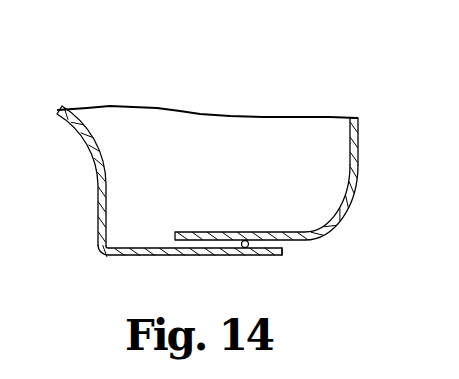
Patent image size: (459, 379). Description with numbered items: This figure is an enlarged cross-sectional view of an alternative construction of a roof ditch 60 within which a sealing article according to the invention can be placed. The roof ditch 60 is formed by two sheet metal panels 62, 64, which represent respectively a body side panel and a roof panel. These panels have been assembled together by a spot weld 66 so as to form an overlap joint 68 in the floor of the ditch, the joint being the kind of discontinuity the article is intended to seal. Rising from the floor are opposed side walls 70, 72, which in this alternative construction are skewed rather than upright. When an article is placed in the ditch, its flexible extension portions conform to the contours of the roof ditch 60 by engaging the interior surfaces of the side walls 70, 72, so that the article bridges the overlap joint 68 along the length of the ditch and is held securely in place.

The roof ditch 60 is at (192, 84).
The sheet metal panel 62 is at (99, 245).
The sheet metal panel 64 is at (337, 224).
The spot weld 66 is at (245, 248).
The overlap joint 68 is at (295, 251).
The side wall 70 is at (70, 127).
The side wall 72 is at (358, 143).